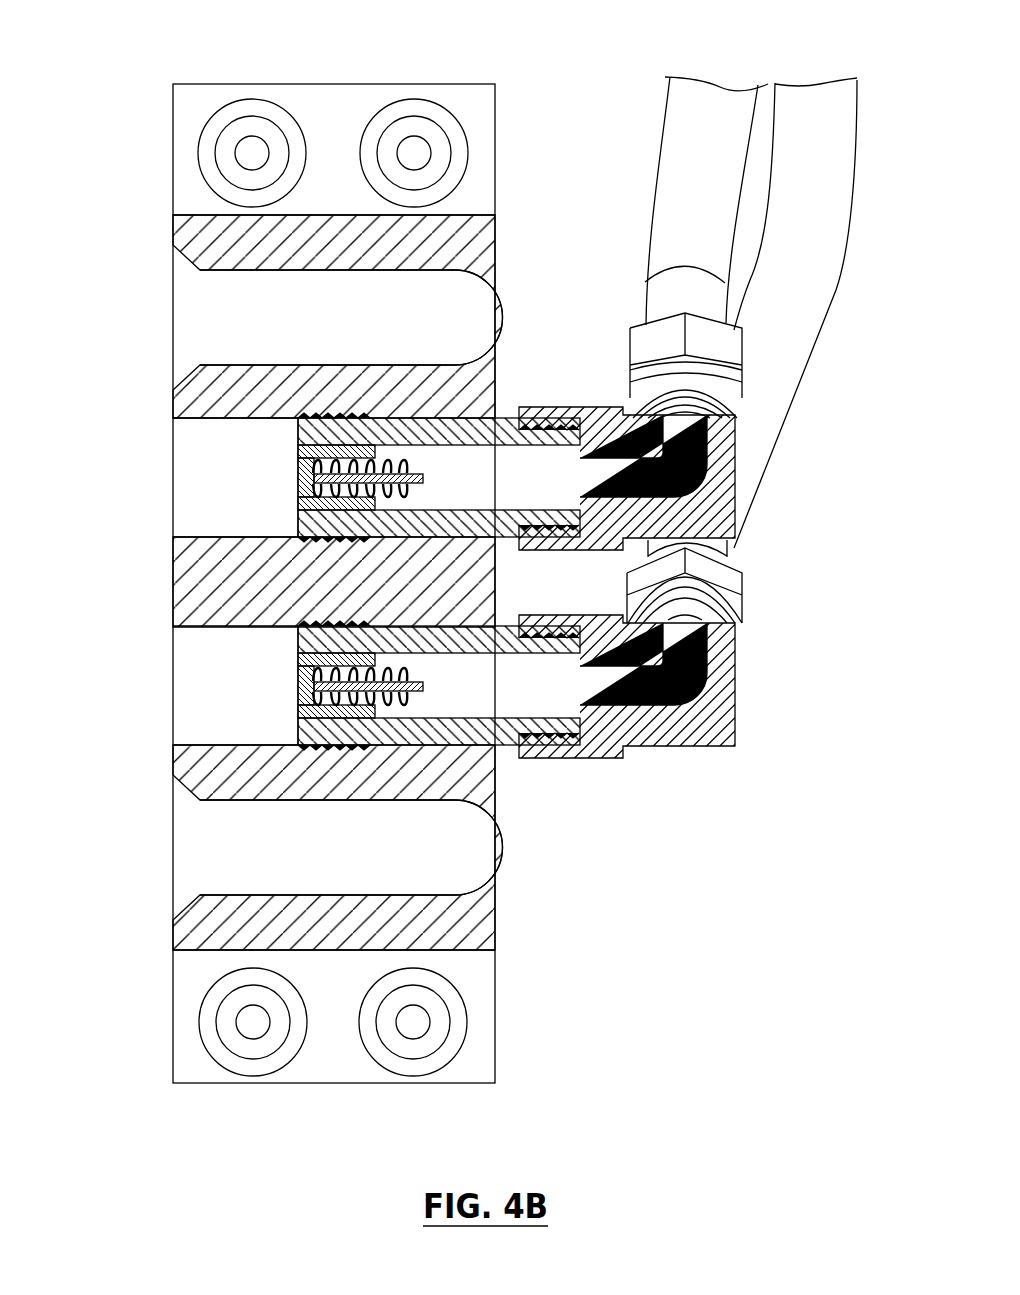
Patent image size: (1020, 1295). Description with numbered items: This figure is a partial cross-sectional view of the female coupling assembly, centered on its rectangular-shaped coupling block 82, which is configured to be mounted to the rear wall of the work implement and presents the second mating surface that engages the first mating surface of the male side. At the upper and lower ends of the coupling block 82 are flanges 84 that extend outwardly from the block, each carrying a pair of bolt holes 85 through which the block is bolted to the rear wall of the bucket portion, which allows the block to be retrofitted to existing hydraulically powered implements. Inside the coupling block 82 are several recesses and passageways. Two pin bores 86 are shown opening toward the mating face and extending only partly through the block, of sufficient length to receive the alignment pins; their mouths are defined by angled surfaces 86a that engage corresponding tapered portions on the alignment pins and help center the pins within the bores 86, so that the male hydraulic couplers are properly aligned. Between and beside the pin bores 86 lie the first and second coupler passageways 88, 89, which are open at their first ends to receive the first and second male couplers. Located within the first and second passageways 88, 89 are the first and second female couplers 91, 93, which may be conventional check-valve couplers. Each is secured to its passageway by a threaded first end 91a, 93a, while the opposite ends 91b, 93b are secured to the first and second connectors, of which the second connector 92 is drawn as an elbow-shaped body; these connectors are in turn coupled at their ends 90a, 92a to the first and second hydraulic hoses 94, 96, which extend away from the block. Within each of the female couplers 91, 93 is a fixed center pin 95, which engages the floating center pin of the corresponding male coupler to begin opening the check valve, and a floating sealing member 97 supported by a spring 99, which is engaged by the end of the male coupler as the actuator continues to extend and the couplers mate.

The coupling block 82 is at (487, 817).
The flanges 84 is at (332, 1055).
The bolt holes 85 is at (423, 1023).
The pin bores 86 is at (222, 835).
The angled surfaces 86a is at (186, 898).
The first coupler passageway 88 is at (215, 468).
The second coupler passageway 89 is at (202, 663).
The end of first connector 90a is at (722, 436).
The first female coupler 91 is at (510, 410).
The threaded first end 91a is at (350, 418).
The opposite end of first female coupler 91b is at (538, 408).
The second connector 92 is at (705, 718).
The end of second connector 92a is at (688, 640).
The second female coupler 93 is at (507, 750).
The threaded first end 93a is at (355, 745).
The opposite end of second female coupler 93b is at (542, 612).
The first hydraulic hose 94 is at (668, 182).
The fixed center pin 95 is at (424, 478).
The second hydraulic hose 96 is at (810, 280).
The floating sealing member 97 is at (376, 452).
The spring 99 is at (400, 494).